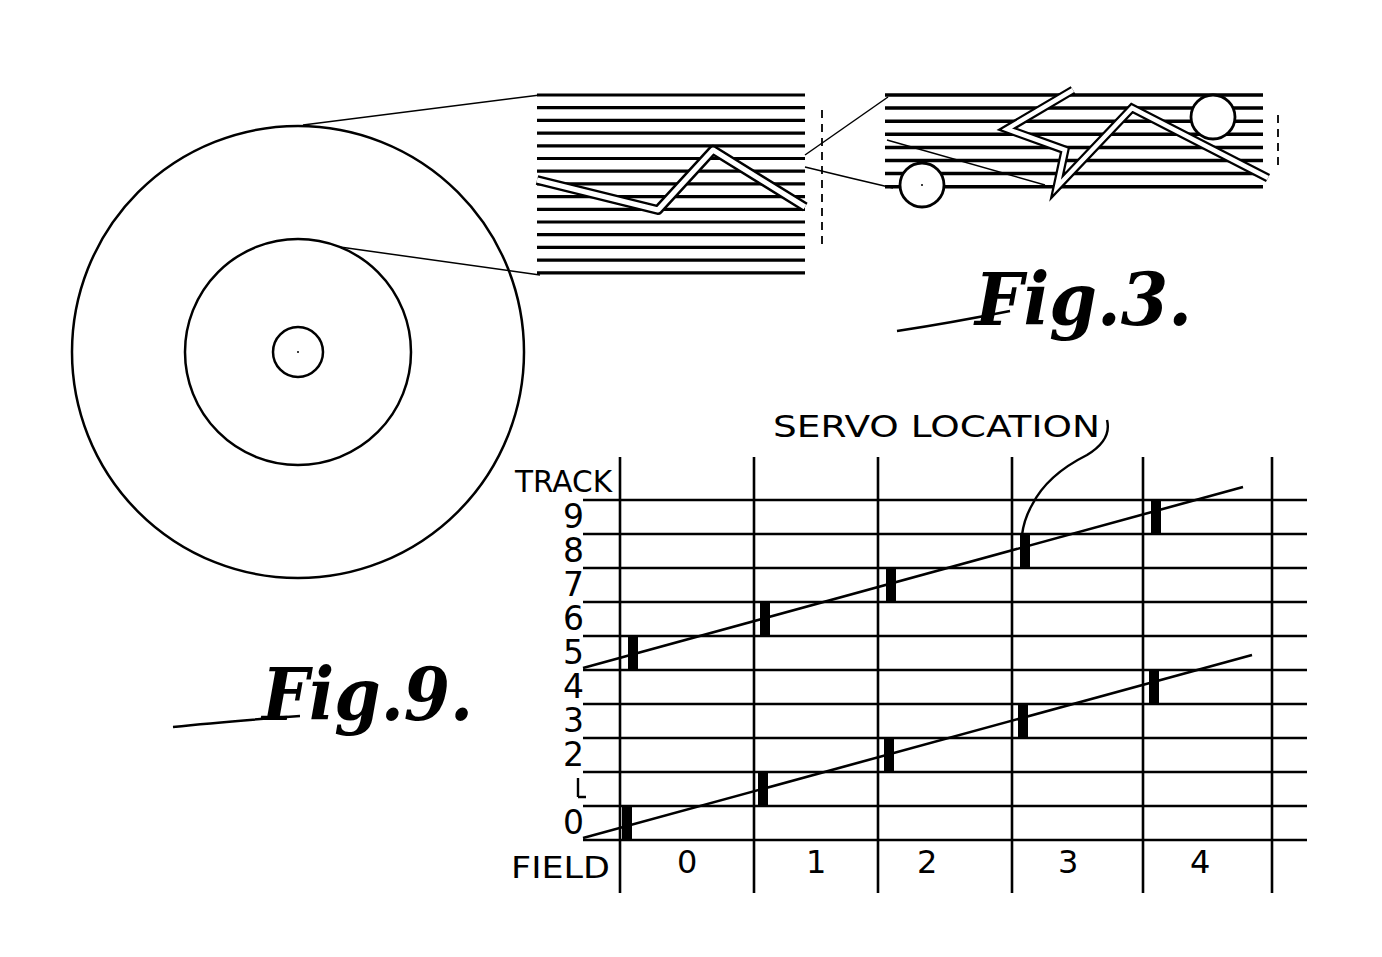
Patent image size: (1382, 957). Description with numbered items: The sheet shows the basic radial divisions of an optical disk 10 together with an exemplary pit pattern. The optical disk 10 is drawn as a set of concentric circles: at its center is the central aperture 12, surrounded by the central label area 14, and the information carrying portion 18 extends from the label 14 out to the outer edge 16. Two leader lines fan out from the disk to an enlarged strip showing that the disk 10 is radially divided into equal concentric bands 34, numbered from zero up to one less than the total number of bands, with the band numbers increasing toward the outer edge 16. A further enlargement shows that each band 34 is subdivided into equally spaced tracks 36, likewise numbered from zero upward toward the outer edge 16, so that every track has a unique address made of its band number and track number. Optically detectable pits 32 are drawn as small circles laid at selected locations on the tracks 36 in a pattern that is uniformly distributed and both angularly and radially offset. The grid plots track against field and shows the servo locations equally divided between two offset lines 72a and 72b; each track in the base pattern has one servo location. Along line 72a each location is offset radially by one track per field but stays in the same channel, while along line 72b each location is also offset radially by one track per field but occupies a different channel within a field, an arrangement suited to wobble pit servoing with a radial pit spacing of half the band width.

In FIG. 3, the optical disk 10 is at (298, 316).
In FIG. 3, the central aperture 12 is at (297, 375).
In FIG. 3, the central label area 14 is at (185, 376).
In FIG. 3, the outer edge 16 is at (234, 135).
In FIG. 3, the information carrying portion 18 is at (158, 202).
In FIG. 3, the pits 32 is at (936, 201).
In FIG. 3, the bands 34 is at (761, 108).
In FIG. 3, the tracks 36 is at (1000, 113).
In FIG. 9, the offset line 72a is at (1262, 440).
In FIG. 9, the offset line 72b is at (1252, 656).